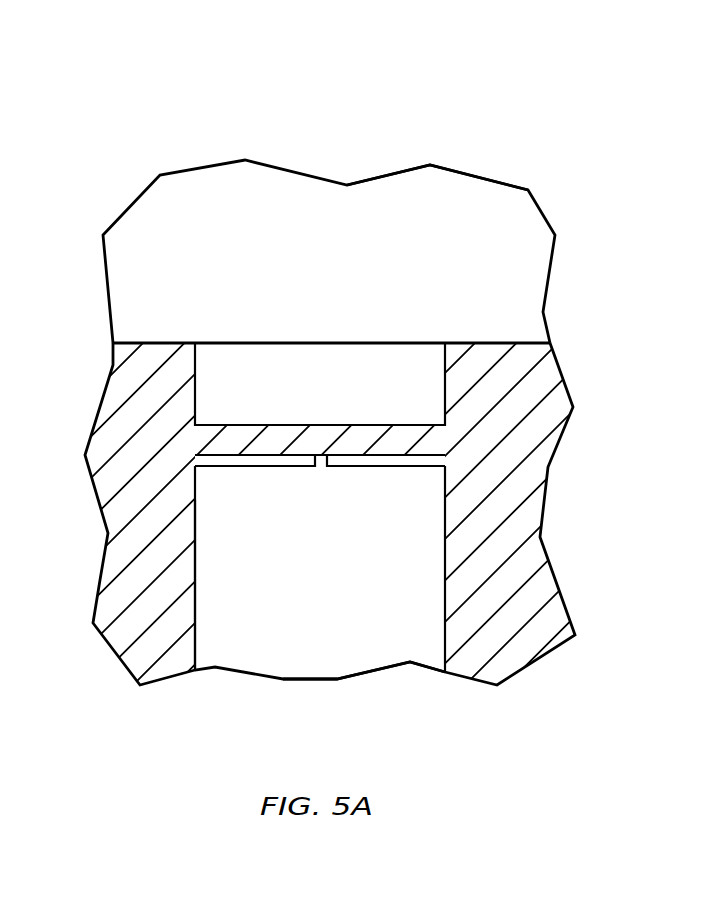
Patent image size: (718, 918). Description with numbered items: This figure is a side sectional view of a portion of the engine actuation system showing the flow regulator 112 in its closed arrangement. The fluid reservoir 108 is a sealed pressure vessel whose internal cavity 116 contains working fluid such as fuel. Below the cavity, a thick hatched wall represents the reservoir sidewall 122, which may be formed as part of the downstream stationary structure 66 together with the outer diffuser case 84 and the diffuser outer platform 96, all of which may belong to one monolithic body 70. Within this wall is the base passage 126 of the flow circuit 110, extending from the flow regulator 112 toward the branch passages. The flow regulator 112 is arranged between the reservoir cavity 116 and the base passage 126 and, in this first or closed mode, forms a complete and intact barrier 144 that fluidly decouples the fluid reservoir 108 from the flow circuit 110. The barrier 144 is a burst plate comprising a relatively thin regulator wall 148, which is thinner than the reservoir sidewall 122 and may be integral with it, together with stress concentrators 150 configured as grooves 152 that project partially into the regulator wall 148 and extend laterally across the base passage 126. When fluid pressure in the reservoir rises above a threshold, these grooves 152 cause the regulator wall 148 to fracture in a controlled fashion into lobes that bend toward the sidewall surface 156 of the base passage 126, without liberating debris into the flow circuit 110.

The downstream stationary structure 66 is at (359, 401).
The monolithic body 70 is at (559, 127).
The fluid reservoir 108 is at (450, 162).
The internal cavity 116 is at (331, 255).
The flow regulator 112 is at (414, 375).
The barrier 144 is at (264, 415).
The regulator wall 148 is at (355, 425).
The stress concentrators 150 is at (320, 499).
The grooves 152 is at (318, 466).
The base passage 126 is at (340, 597).
The sidewall surface 156 is at (195, 617).
The flow circuit 110 is at (390, 670).
The outer diffuser case 84 is at (359, 530).
The outer platform 96 is at (359, 530).
The tubular sidewall 122 is at (558, 499).